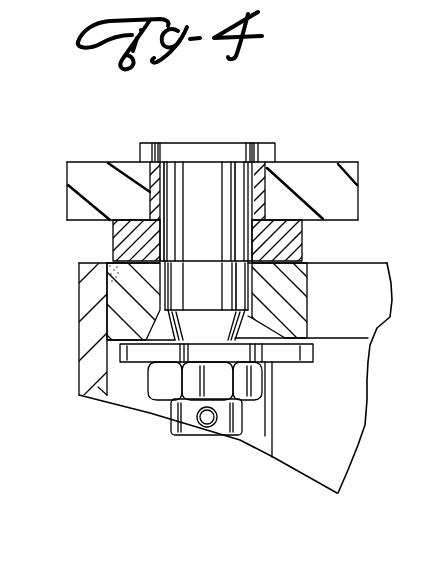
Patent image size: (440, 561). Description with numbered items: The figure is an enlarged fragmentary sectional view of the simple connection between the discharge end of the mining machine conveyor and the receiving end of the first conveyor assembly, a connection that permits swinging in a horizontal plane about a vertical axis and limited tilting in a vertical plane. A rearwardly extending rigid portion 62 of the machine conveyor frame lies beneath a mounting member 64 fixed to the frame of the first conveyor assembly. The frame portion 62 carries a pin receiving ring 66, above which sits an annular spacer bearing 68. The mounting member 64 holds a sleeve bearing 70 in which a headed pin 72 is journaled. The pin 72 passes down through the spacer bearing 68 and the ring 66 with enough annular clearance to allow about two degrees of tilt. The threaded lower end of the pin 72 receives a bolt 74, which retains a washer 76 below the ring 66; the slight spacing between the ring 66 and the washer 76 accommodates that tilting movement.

The rigid frame portion 62 is at (82, 357).
The mounting member 64 is at (317, 162).
The pin receiving ring 66 is at (110, 290).
The annular spacer bearing 68 is at (117, 233).
The sleeve bearing 70 is at (121, 162).
The headed pin 72 is at (199, 143).
The bolt 74 is at (171, 398).
The washer 76 is at (142, 362).